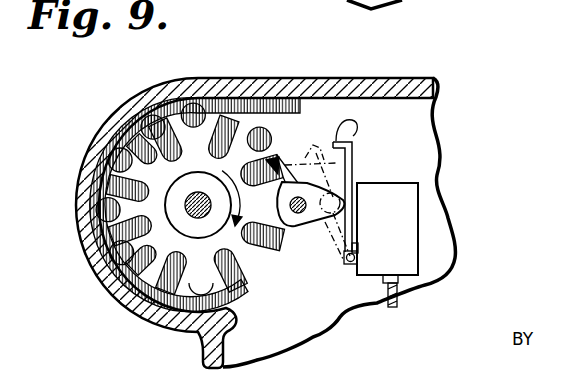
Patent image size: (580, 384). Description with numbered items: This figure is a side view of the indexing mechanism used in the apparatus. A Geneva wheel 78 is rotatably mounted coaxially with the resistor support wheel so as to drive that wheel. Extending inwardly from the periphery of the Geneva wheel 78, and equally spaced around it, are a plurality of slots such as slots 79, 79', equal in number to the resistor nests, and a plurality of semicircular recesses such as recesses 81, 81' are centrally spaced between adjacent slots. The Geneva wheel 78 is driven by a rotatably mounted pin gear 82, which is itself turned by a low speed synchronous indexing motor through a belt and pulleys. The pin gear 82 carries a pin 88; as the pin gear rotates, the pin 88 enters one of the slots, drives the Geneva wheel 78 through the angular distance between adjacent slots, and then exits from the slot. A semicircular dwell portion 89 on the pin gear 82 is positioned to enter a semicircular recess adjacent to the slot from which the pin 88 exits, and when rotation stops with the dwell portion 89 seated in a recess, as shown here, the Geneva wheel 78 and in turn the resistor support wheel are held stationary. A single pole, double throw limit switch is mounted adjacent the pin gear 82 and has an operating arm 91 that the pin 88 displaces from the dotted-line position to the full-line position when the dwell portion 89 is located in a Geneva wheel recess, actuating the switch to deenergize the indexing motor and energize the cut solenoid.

The Geneva wheel 78 is at (128, 213).
The slot 79 is at (95, 179).
The slot 79' is at (94, 247).
The semicircular recess 81 is at (166, 205).
The semicircular recess 81' is at (96, 277).
The pin gear 82 is at (290, 158).
The pin 88 is at (360, 183).
The semicircular dwell portion 89 is at (285, 243).
The operating arm 91 is at (317, 160).